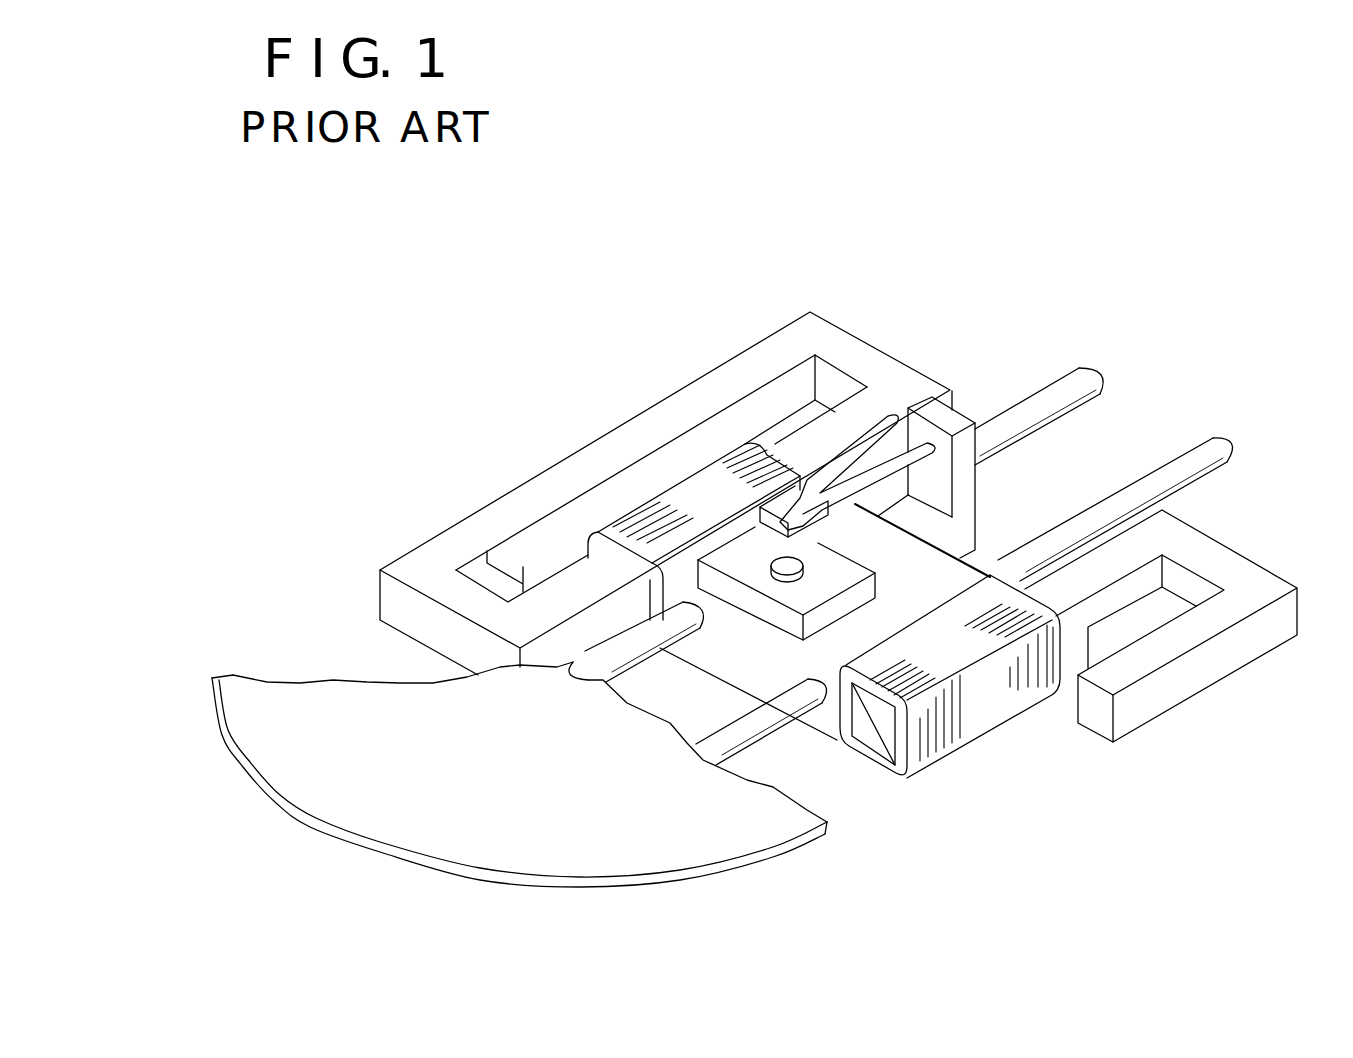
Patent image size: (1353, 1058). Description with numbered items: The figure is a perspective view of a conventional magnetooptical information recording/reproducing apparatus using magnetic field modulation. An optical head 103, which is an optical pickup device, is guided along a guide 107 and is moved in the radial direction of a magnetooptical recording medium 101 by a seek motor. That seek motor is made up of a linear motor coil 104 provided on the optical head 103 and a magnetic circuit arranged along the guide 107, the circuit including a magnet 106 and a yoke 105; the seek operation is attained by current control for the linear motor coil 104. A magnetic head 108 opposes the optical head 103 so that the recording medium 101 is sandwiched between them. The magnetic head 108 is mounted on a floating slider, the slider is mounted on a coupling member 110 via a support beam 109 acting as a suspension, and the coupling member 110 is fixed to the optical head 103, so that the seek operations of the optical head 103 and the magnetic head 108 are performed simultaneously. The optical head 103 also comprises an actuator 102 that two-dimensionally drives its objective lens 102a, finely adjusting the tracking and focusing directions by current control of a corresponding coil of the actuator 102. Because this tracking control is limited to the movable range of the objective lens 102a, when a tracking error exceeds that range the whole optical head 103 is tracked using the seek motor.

The magnetooptical recording medium 101 is at (327, 805).
The actuator 102 is at (823, 615).
The objective lens 102a is at (692, 523).
The optical head 103 is at (907, 600).
The linear motor coil 104 is at (1032, 700).
The yoke 105 is at (713, 387).
The magnet 106 is at (768, 393).
The guide 107 is at (1067, 386).
The magnetic head 108 is at (783, 558).
The support beam 109 is at (907, 433).
The coupling member 110 is at (980, 525).